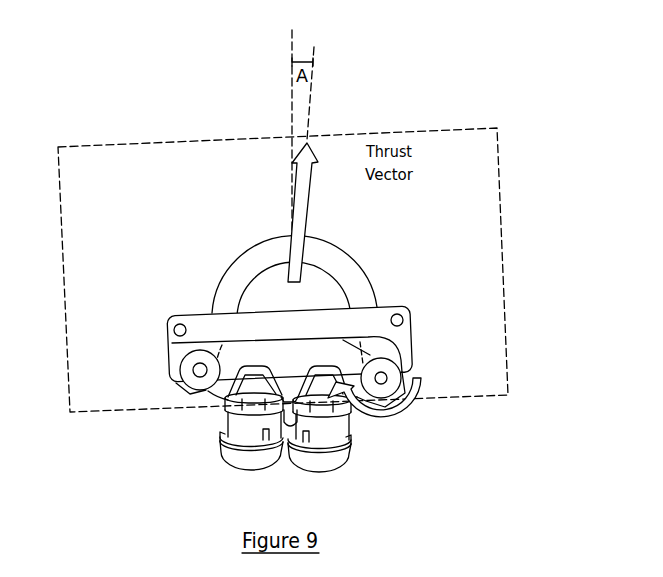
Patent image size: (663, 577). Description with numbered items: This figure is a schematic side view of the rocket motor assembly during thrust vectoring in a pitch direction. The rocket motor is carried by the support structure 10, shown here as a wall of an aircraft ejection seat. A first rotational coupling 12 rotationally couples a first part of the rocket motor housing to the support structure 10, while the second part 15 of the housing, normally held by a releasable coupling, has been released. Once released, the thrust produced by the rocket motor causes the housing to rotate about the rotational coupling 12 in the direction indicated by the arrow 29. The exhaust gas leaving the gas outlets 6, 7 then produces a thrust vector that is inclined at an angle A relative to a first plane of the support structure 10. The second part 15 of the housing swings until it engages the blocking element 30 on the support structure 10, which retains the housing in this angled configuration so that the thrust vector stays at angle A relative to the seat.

The support structure 10 is at (502, 226).
The blocking element 30 is at (167, 343).
The first rotational coupling 12 is at (381, 378).
The second part of the rocket motor housing 15 is at (187, 384).
The gas outlet 6 is at (236, 457).
The gas outlet 7 is at (333, 467).
The arrow 29 is at (387, 421).